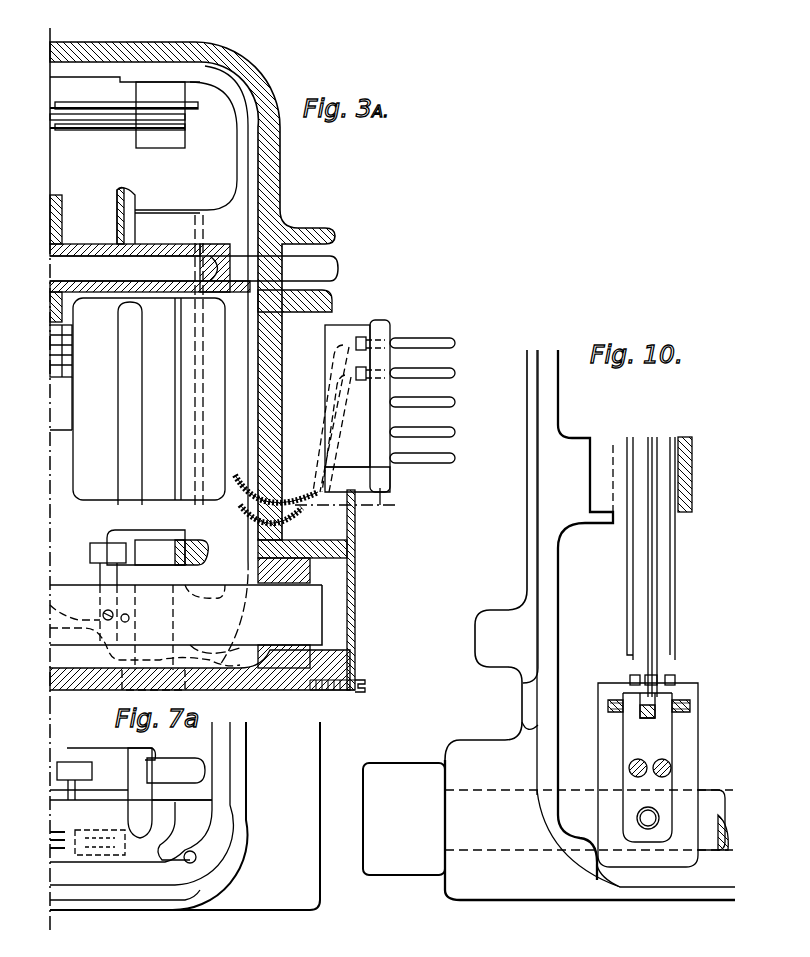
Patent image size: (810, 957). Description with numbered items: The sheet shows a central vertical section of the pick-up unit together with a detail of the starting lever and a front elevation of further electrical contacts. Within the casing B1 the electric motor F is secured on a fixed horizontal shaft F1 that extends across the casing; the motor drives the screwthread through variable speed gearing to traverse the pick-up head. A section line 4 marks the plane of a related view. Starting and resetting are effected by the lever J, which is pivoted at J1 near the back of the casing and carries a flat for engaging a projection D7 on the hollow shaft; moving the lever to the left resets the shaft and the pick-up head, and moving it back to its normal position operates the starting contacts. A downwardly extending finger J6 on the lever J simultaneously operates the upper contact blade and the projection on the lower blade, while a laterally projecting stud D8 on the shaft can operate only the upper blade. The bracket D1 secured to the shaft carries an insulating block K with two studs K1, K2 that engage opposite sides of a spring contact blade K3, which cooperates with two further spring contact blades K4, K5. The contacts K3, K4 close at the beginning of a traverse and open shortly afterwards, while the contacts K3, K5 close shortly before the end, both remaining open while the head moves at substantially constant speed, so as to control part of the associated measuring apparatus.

In FIG. 3A, the casing B1 is at (265, 130).
In FIG. 10, the casing B1 is at (505, 628).
In FIG. 3A, the fixed horizontal shaft F1 is at (240, 256).
In FIG. 3A, the electric motor F is at (160, 362).
In FIG. 3A, the section line 4 is at (345, 513).
In FIG. 3A, the lever J is at (196, 551).
In FIG. 7A, the lever J is at (195, 768).
In FIG. 3A, the pivot J1 is at (198, 662).
In FIG. 7A, the finger J6 is at (143, 822).
In FIG. 3A, the projection D7 is at (92, 548).
In FIG. 7A, the projection D7 is at (57, 765).
In FIG. 3A, the stud D8 is at (130, 618).
In FIG. 7A, the stud D8 is at (105, 830).
In FIG. 10, the insulating block K is at (645, 740).
In FIG. 10, the stud K1 is at (608, 706).
In FIG. 10, the stud K2 is at (683, 702).
In FIG. 10, the spring contact blade K3 is at (652, 673).
In FIG. 10, the spring contact blade K4 is at (630, 660).
In FIG. 10, the spring contact blade K5 is at (673, 645).
In FIG. 10, the bracket D1 is at (697, 776).